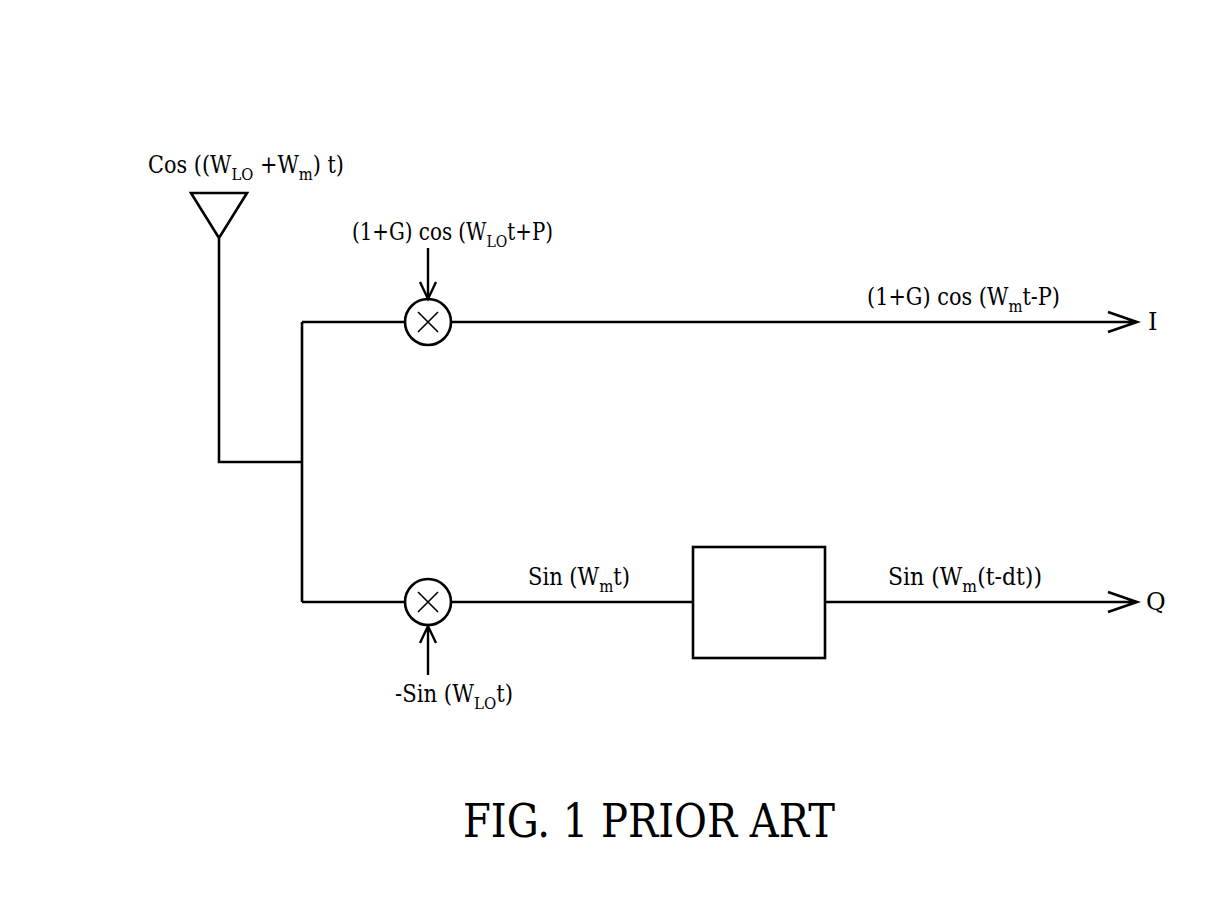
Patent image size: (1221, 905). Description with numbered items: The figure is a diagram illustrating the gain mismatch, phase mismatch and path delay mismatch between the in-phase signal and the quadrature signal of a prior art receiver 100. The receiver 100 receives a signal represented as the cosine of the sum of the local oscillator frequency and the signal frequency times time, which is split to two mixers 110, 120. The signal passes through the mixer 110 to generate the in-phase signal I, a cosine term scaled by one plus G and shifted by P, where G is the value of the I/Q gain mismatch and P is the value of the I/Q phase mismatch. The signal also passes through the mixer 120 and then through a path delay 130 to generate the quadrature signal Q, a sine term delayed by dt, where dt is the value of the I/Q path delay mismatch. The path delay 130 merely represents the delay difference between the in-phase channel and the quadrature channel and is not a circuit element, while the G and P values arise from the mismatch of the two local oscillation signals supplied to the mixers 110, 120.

The receiver 100 is at (1063, 113).
The mixer 110 is at (437, 342).
The mixer 120 is at (440, 580).
The path delay 130 is at (757, 546).